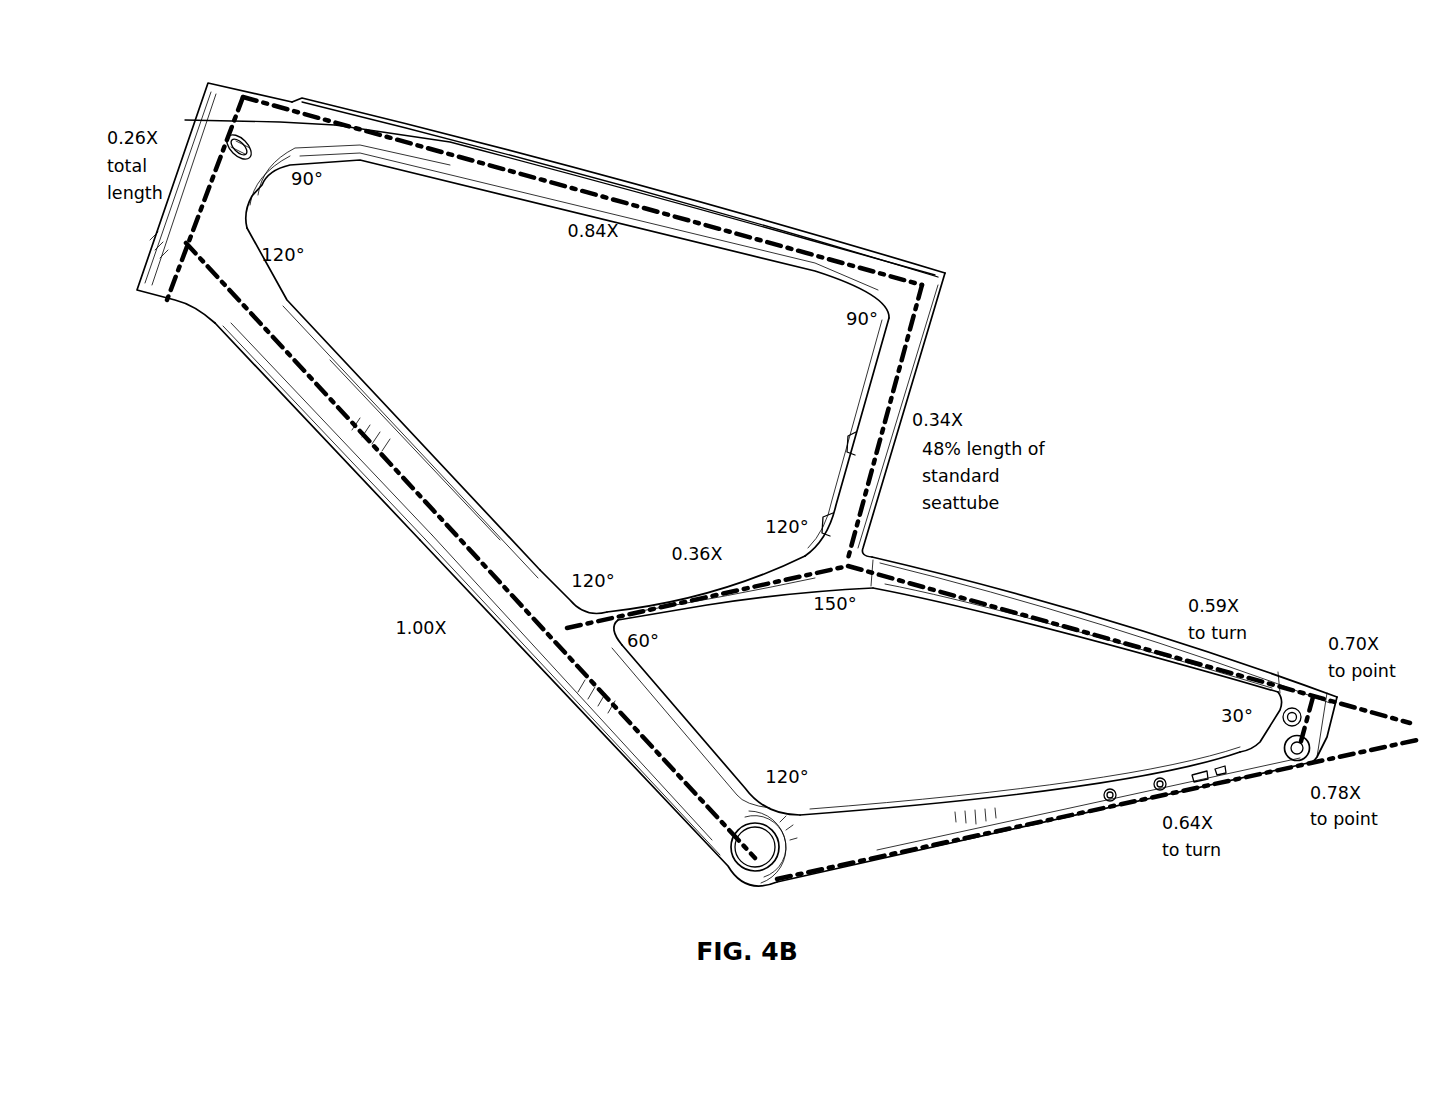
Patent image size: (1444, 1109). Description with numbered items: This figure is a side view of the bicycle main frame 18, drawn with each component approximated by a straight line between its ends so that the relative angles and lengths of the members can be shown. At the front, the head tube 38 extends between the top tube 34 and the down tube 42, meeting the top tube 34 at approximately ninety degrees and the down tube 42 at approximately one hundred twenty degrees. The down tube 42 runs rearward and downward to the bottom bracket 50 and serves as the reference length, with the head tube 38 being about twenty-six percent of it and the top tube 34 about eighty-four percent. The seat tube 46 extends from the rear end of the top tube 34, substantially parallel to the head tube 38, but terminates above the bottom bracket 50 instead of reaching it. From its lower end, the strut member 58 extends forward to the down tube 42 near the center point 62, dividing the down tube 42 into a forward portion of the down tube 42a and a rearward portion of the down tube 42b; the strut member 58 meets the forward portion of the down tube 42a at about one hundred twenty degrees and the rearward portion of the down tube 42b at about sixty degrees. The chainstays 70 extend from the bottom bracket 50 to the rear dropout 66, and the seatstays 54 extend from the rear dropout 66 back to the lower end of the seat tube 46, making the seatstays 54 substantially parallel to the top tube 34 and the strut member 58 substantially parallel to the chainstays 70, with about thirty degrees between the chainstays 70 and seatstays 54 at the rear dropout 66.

The main frame 18 is at (1223, 303).
The top tube 34 is at (520, 172).
The head tube 38 is at (218, 156).
The down tube 42 is at (494, 557).
The forward portion of the down tube 42a is at (280, 397).
The rearward portion of the down tube 42b is at (600, 740).
The seat tube 46 is at (900, 373).
The bottom bracket 50 is at (770, 880).
The seatstays 54 is at (1072, 628).
The strut member 58 is at (737, 600).
The center point 62 is at (455, 515).
The rear dropout 66 is at (1313, 753).
The chainstays 70 is at (1040, 825).